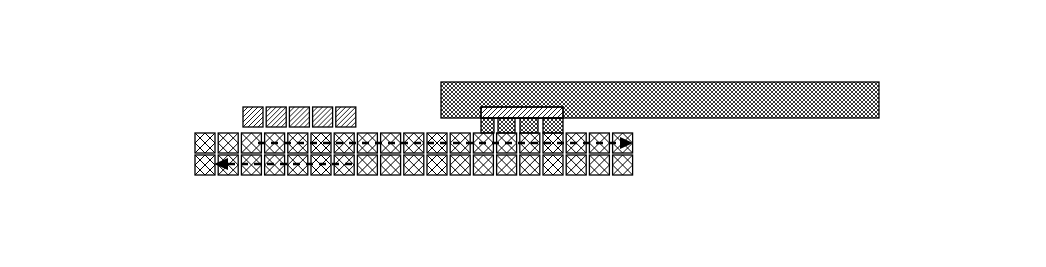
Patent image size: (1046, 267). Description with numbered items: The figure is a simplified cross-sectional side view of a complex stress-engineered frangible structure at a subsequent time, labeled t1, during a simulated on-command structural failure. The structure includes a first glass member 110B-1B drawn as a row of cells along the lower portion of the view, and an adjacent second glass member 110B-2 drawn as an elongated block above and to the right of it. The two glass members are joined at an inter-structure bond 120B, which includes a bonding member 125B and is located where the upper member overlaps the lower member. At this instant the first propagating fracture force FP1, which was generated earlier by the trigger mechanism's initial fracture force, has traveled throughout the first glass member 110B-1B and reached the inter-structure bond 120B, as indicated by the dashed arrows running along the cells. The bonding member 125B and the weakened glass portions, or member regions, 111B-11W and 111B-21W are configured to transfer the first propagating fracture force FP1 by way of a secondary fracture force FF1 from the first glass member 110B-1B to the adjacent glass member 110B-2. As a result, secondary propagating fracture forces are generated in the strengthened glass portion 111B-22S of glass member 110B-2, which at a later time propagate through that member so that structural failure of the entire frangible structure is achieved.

The glass member 110B-1B is at (194, 142).
The glass member 110B-2 is at (441, 84).
The strengthened glass portion 111B-22S is at (720, 92).
The inter-structure bond 120B is at (512, 106).
The weakened glass portion 111B-11W is at (517, 118).
The weakened glass portion 111B-21W is at (538, 117).
The bonding member 125B is at (563, 122).
The first propagating fracture force FP1 is at (369, 135).
The secondary fracture force FF1 is at (503, 142).